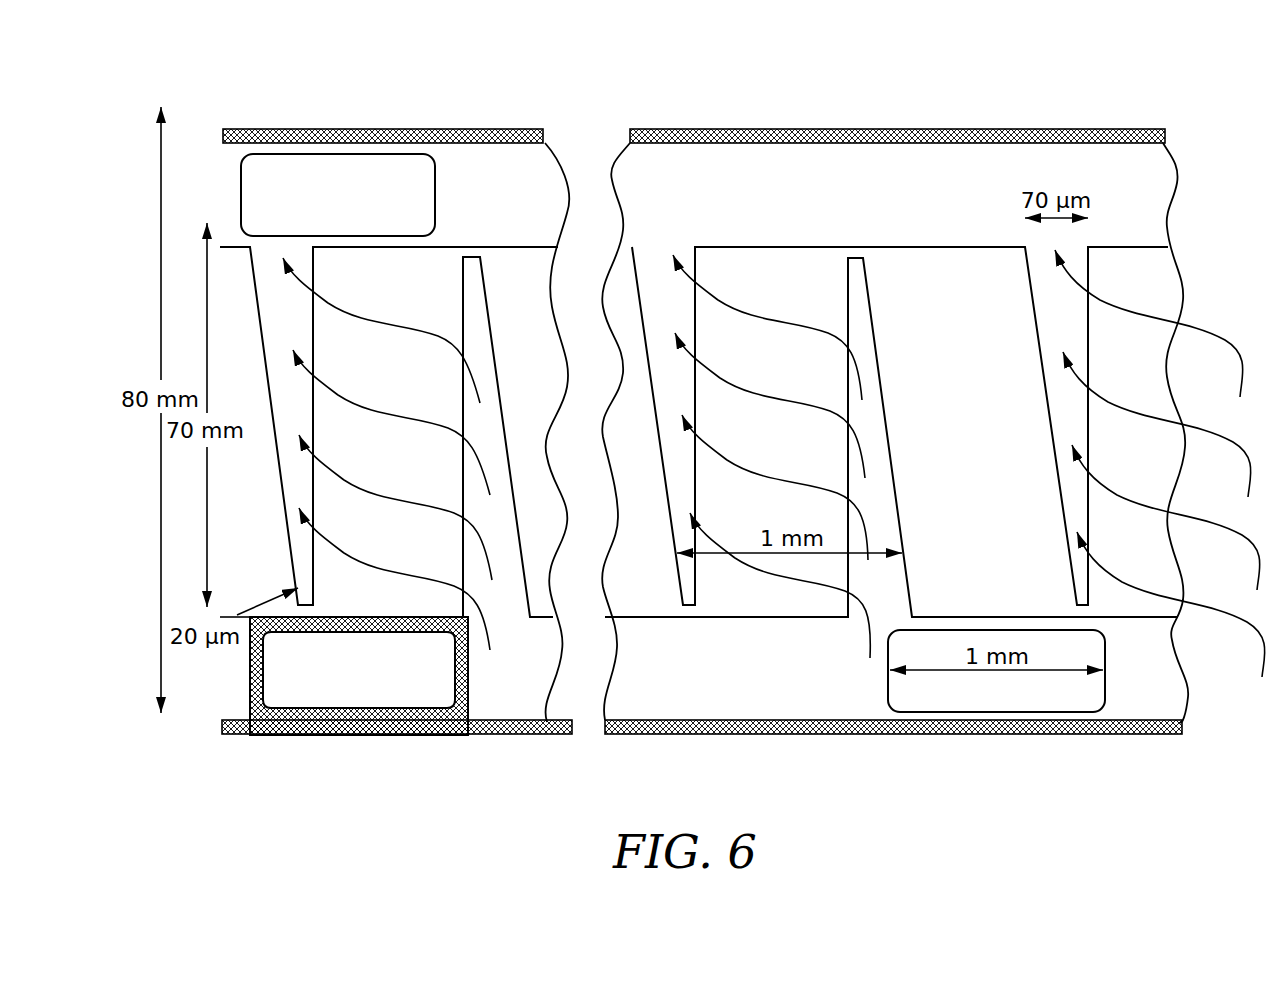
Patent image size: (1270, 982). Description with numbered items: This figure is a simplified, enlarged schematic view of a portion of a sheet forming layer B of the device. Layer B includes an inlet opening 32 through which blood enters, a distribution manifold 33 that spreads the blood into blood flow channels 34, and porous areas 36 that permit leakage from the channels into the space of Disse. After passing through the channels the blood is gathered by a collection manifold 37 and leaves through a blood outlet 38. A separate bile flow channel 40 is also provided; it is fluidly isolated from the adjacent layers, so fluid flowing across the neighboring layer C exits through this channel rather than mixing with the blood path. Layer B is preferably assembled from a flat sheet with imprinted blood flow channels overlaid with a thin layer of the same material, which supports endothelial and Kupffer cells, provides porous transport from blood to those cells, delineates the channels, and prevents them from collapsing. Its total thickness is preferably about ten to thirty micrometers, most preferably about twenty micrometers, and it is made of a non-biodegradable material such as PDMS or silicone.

The inlet opening 32 is at (1000, 693).
The distribution manifold 33 is at (848, 705).
The blood flow channels 34 is at (1070, 543).
The porous areas 36 is at (400, 300).
The collection manifold 37 is at (482, 175).
The blood outlet 38 is at (327, 182).
The bile flow channel 40 is at (360, 682).